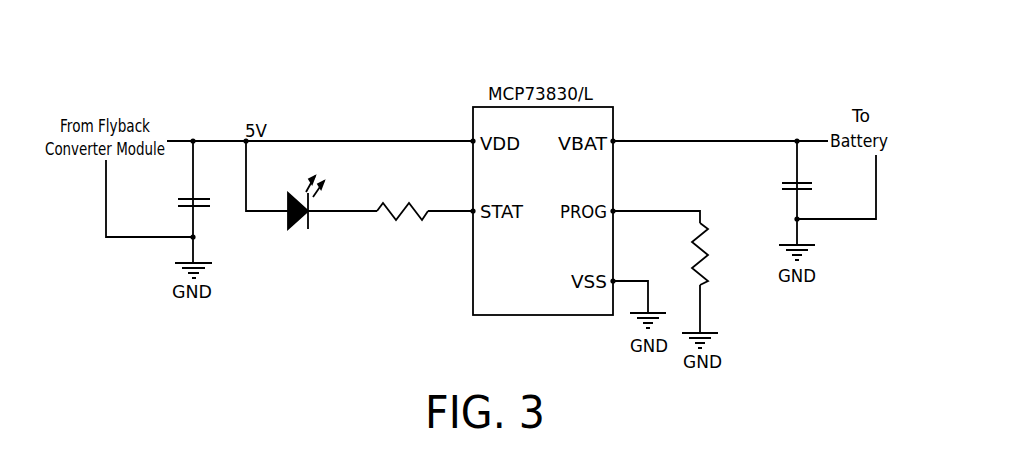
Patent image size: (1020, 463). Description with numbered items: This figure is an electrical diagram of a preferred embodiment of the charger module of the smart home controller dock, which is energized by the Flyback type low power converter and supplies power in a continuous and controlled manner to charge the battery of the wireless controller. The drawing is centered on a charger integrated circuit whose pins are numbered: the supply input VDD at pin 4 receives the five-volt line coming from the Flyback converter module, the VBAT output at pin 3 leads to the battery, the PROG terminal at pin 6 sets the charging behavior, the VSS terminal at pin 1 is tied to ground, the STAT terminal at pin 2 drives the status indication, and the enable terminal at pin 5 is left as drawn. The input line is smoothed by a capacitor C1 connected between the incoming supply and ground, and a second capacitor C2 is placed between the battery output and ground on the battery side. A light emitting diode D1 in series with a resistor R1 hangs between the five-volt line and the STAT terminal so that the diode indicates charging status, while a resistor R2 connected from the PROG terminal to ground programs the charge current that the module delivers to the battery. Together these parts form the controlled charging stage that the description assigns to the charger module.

The VSS pin 1 is at (620, 268).
The STAT pin 2 is at (465, 199).
The VBAT pin 3 is at (620, 128).
The VDD pin 4 is at (465, 129).
The -CE pin 5 is at (482, 273).
The PROG pin 6 is at (620, 198).
The input capacitor 4.7uF C1 is at (211, 212).
The battery capacitor 4.7uF C2 is at (816, 177).
The status LED D1 is at (306, 216).
The LED resistor 1K R1 is at (402, 211).
The programming resistor 1K-10K R2 is at (731, 254).